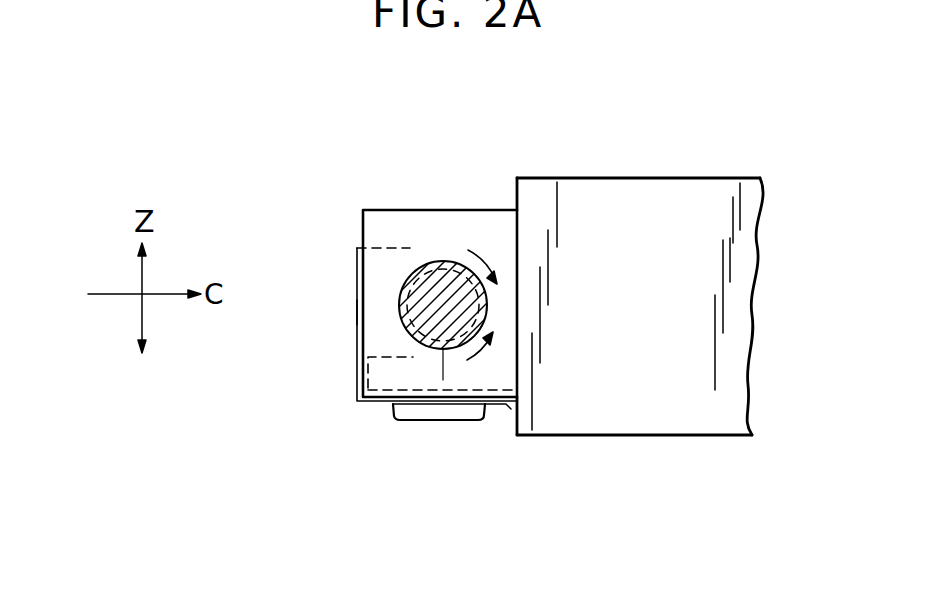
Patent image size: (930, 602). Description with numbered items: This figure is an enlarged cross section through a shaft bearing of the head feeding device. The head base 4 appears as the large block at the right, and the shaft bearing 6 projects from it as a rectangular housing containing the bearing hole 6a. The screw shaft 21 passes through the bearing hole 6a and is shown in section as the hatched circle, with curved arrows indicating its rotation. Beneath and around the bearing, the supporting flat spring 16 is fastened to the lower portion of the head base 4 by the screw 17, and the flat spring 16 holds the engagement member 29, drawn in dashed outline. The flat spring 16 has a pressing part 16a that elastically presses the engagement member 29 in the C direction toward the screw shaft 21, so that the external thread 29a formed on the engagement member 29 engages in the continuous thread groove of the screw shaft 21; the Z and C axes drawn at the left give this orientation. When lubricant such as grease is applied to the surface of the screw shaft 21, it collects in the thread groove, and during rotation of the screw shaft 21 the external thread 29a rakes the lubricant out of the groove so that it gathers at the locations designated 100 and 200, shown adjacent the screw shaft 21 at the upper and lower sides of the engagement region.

The head base 4 is at (633, 403).
The shaft bearing 6 is at (487, 222).
The bearing hole 6a is at (443, 380).
The supporting flat spring 16 is at (357, 375).
The pressing part 16a is at (363, 275).
The screw 17 is at (408, 422).
The screw shaft 21 is at (447, 258).
The engagement member 29 is at (352, 272).
The external thread 29a is at (420, 275).
The lubricant collection location 100 is at (422, 247).
The lubricant collection location 200 is at (426, 366).